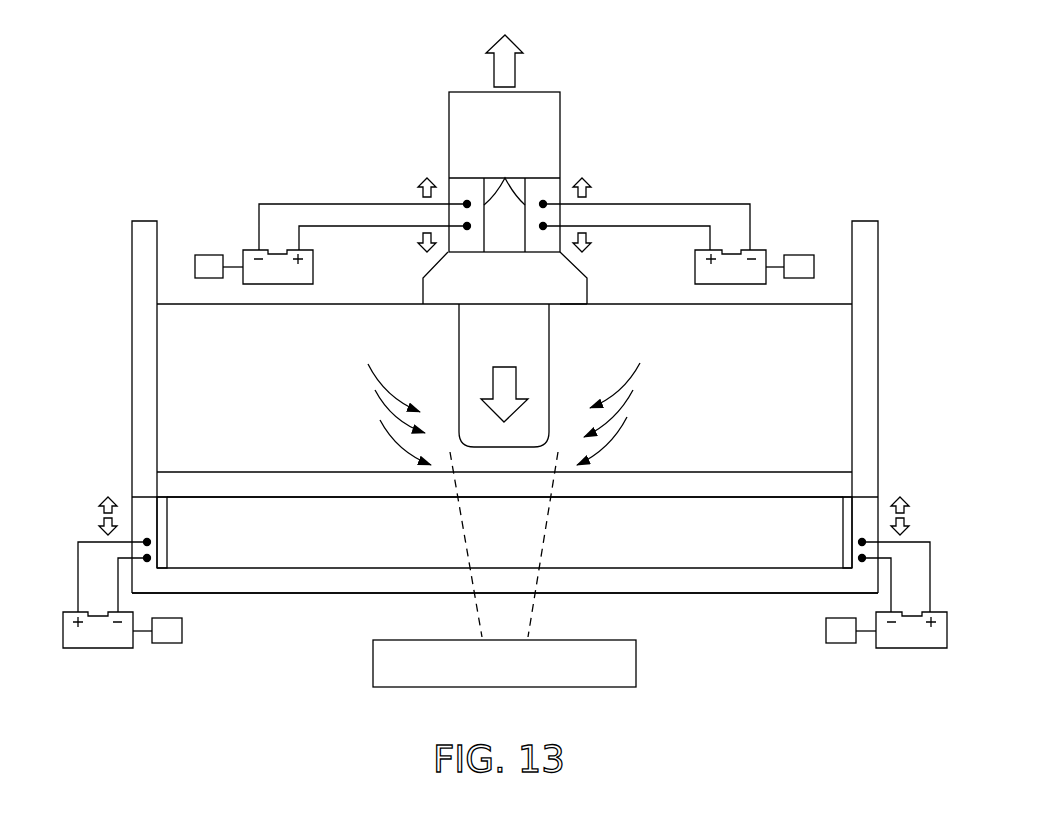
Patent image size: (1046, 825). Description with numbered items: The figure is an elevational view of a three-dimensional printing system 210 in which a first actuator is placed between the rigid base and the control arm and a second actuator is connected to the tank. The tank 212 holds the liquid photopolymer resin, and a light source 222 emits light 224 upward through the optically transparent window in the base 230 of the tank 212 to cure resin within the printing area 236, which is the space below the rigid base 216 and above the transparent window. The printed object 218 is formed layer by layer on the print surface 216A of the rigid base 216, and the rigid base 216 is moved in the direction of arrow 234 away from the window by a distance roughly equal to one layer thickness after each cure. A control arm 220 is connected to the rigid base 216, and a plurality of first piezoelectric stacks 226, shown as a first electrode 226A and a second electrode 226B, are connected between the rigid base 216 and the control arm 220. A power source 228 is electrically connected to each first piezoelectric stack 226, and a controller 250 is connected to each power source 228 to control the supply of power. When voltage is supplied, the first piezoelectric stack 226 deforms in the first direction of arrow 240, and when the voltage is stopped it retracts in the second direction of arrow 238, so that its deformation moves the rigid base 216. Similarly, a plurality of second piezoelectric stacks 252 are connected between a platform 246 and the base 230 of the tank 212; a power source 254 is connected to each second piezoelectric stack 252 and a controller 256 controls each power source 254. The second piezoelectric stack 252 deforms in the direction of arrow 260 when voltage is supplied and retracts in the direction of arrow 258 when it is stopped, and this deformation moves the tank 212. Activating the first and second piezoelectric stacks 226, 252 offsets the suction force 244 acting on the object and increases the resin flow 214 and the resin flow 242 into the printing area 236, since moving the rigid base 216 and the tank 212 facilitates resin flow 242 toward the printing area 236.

The three-dimensional printing system 210 is at (783, 101).
The tank 212 is at (128, 257).
The resin flow 214 is at (349, 304).
The rigid base 216 is at (587, 283).
The print surface 216A is at (567, 305).
The printed object 218 is at (459, 340).
The control arm 220 is at (449, 142).
The light source 222 is at (636, 667).
The light 224 is at (533, 617).
The first piezoelectric stack 226 is at (505, 178).
The first electrode 226A is at (880, 508).
The second electrode 226B is at (128, 507).
The power source 228 is at (243, 255).
The base of the tank 230 is at (302, 497).
The arrow 234 is at (493, 71).
The printing area 236 is at (508, 458).
The arrow 238 is at (418, 190).
The arrow 240 is at (421, 240).
The resin flow 242 is at (640, 364).
The suction force 244 is at (516, 380).
The platform 246 is at (240, 593).
The controller 250 is at (206, 255).
The second piezoelectric stack 252 is at (167, 530).
The power source 254 is at (97, 648).
The controller 256 is at (168, 643).
The arrow 258 is at (107, 497).
The arrow 260 is at (100, 525).